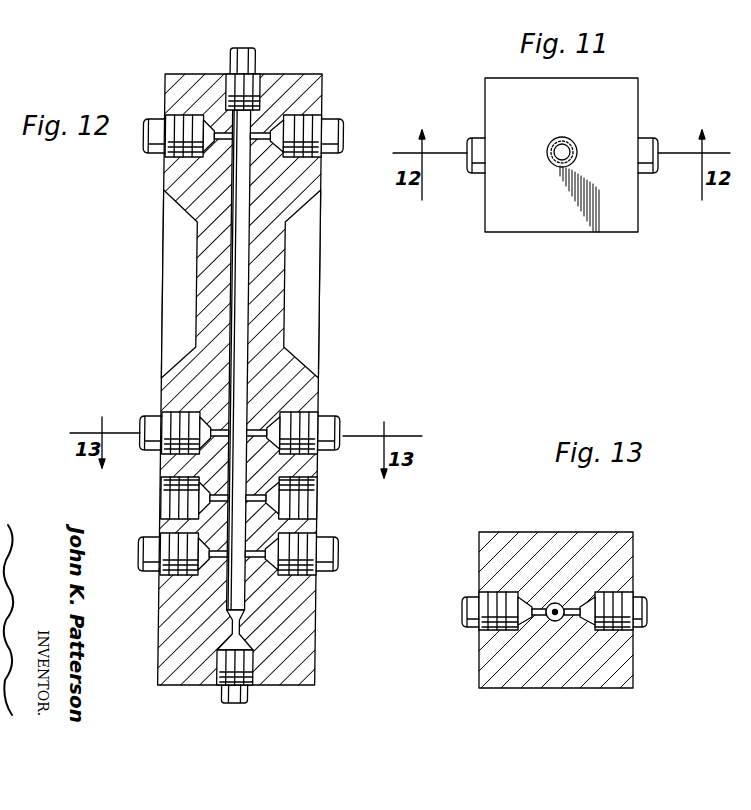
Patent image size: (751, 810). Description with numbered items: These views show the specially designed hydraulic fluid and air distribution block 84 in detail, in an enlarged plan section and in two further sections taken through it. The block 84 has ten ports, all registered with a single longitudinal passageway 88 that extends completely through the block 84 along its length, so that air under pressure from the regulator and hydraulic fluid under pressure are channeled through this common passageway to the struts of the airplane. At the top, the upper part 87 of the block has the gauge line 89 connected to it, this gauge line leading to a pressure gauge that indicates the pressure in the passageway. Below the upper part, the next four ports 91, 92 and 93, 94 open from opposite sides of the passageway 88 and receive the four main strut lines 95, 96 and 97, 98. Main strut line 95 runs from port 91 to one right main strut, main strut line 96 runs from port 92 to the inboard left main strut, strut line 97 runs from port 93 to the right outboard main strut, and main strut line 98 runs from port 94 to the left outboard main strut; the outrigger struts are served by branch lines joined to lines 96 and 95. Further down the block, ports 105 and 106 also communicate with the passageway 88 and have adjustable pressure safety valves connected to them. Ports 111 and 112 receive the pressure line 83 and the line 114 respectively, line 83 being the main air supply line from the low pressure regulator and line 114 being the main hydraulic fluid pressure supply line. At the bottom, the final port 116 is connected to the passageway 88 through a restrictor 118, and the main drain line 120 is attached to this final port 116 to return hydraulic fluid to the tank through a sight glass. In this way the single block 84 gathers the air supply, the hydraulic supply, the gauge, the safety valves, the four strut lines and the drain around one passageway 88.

In FIG. 12, the pressure line 83 is at (333, 543).
In FIG. 12, the hydraulic fluid and air distribution block 84 is at (295, 613).
In FIG. 11, the hydraulic fluid and air distribution block 84 is at (578, 220).
In FIG. 13, the hydraulic fluid and air distribution block 84 is at (615, 668).
In FIG. 12, the upper part 87 is at (258, 98).
In FIG. 12, the longitudinal passageway 88 is at (243, 310).
In FIG. 13, the longitudinal passageway 88 is at (557, 601).
In FIG. 12, the gauge line 89 is at (251, 50).
In FIG. 11, the gauge line 89 is at (566, 140).
In FIG. 12, the port 91 is at (310, 125).
In FIG. 12, the port 92 is at (177, 125).
In FIG. 12, the port 93 is at (303, 422).
In FIG. 13, the port 93 is at (625, 600).
In FIG. 12, the port 94 is at (167, 422).
In FIG. 13, the port 94 is at (493, 602).
In FIG. 12, the main strut line 95 is at (333, 137).
In FIG. 11, the main strut line 95 is at (655, 170).
In FIG. 12, the main strut line 96 is at (150, 147).
In FIG. 11, the main strut line 96 is at (470, 172).
In FIG. 12, the main strut line 97 is at (335, 425).
In FIG. 13, the main strut line 97 is at (645, 605).
In FIG. 12, the main strut line 98 is at (147, 433).
In FIG. 13, the main strut line 98 is at (470, 620).
In FIG. 12, the port 105 is at (313, 497).
In FIG. 12, the port 106 is at (167, 488).
In FIG. 12, the port 111 is at (303, 571).
In FIG. 12, the port 112 is at (157, 566).
In FIG. 12, the main hydraulic fluid pressure supply line 114 is at (142, 557).
In FIG. 12, the final port 116 is at (253, 668).
In FIG. 12, the restrictor 118 is at (240, 627).
In FIG. 13, the restrictor 118 is at (556, 616).
In FIG. 12, the main drain line 120 is at (243, 695).